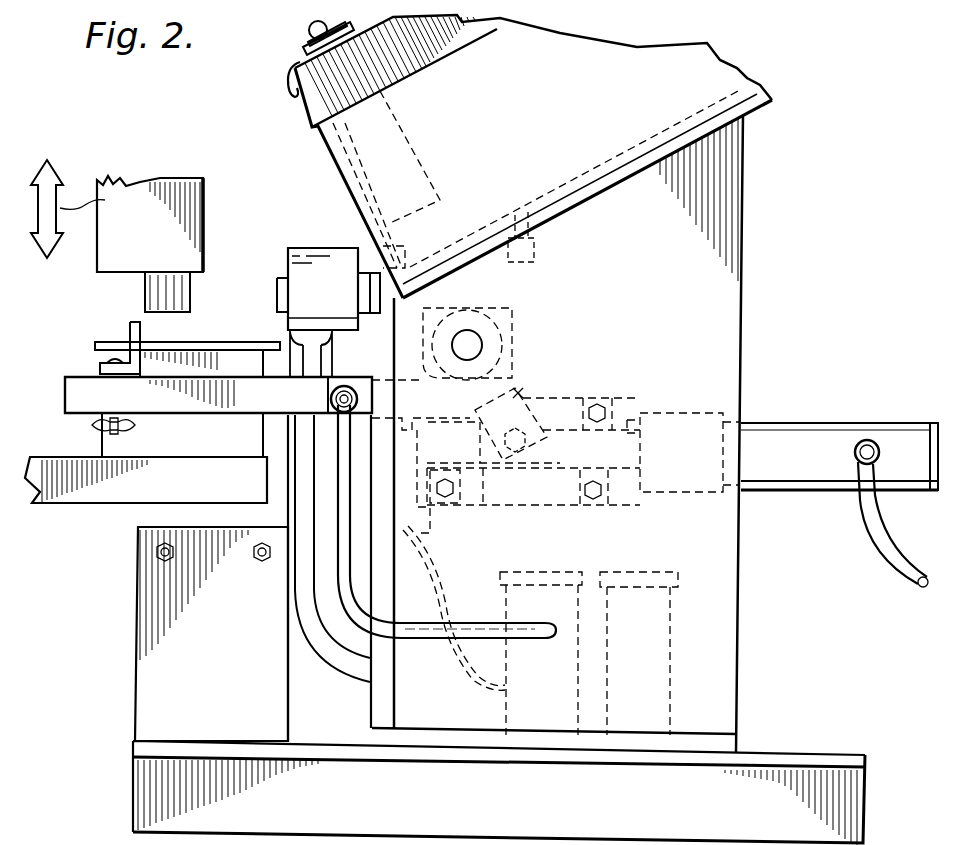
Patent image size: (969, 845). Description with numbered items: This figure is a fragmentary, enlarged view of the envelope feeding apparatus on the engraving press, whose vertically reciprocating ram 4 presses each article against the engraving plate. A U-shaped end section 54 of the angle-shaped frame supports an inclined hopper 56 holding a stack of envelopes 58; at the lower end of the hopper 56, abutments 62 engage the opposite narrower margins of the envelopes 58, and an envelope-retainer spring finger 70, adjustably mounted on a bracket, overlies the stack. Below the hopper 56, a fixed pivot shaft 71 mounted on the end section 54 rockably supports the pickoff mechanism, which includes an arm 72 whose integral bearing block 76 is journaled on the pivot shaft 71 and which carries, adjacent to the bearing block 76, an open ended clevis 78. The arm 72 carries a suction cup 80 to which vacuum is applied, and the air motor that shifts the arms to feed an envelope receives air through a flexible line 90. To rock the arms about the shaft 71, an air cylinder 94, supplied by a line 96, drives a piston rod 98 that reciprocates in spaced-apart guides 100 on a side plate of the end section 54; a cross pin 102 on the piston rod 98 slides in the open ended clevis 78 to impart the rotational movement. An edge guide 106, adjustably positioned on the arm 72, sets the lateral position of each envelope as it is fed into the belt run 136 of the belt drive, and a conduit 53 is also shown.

The ram 4 is at (205, 213).
The conduit 53 is at (428, 528).
The end section 54 is at (377, 693).
The inclined hopper 56 is at (703, 80).
The envelopes 58 is at (443, 34).
The abutments 62 is at (318, 132).
The envelope-retainer spring finger 70 is at (287, 78).
The fixed pivot shaft 71 is at (468, 345).
The arm 72 is at (80, 392).
The bearing block 76 is at (513, 340).
The open ended clevis 78 is at (520, 392).
The suction cup 80 is at (294, 367).
The flexible line 90 is at (338, 578).
The air cylinder 94 is at (807, 433).
The line 96 is at (882, 552).
The piston rod 98 is at (622, 427).
The guides 100 is at (585, 395).
The cross pin 102 is at (531, 485).
The edge guide 106 is at (130, 322).
The belt run 136 is at (323, 248).